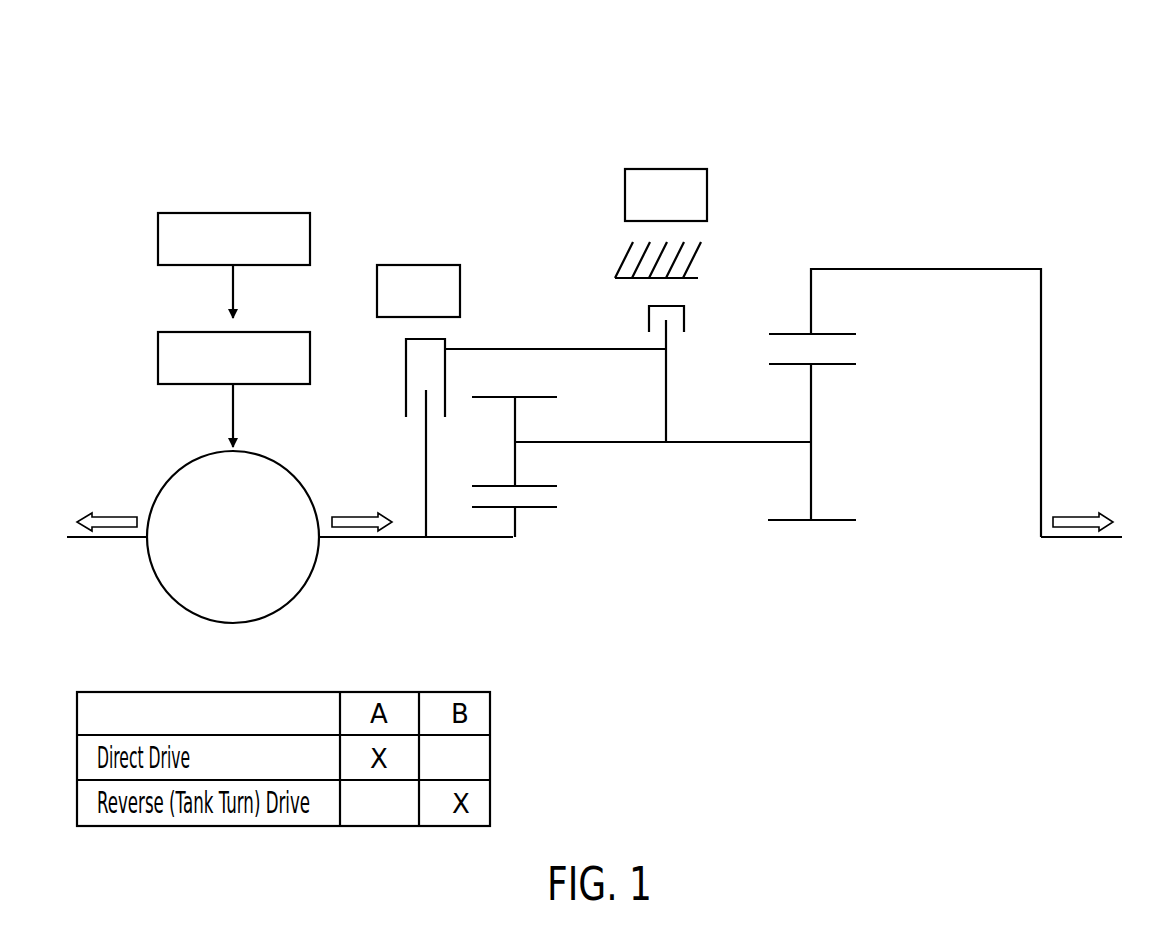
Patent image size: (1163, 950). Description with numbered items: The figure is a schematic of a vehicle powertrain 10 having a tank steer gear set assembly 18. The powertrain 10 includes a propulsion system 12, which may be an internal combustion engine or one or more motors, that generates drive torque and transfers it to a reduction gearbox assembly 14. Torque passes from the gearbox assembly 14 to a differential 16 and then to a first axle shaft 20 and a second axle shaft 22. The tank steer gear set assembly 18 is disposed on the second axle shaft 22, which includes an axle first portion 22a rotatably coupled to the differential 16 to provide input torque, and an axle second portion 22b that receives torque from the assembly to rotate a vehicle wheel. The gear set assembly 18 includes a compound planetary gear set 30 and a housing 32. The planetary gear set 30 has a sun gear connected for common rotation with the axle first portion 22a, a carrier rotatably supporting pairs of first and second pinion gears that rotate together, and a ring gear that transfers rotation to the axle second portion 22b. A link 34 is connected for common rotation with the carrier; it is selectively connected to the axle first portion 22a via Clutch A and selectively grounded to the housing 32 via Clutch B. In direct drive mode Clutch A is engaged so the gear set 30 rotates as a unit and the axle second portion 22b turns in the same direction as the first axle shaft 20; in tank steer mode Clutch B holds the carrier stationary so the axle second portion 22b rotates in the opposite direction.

The vehicle powertrain 10 is at (138, 110).
The propulsion system 12 is at (158, 238).
The reduction gearbox assembly 14 is at (158, 358).
The differential 16 is at (161, 489).
The tank steer gear set assembly 18 is at (705, 112).
The first axle shaft 20 is at (107, 540).
The second axle shaft 22 is at (399, 578).
The axle first portion 22a is at (358, 540).
The axle second portion 22b is at (1083, 540).
The compound planetary gear set 30 is at (667, 548).
The housing 32 is at (698, 278).
The link 34 is at (530, 349).